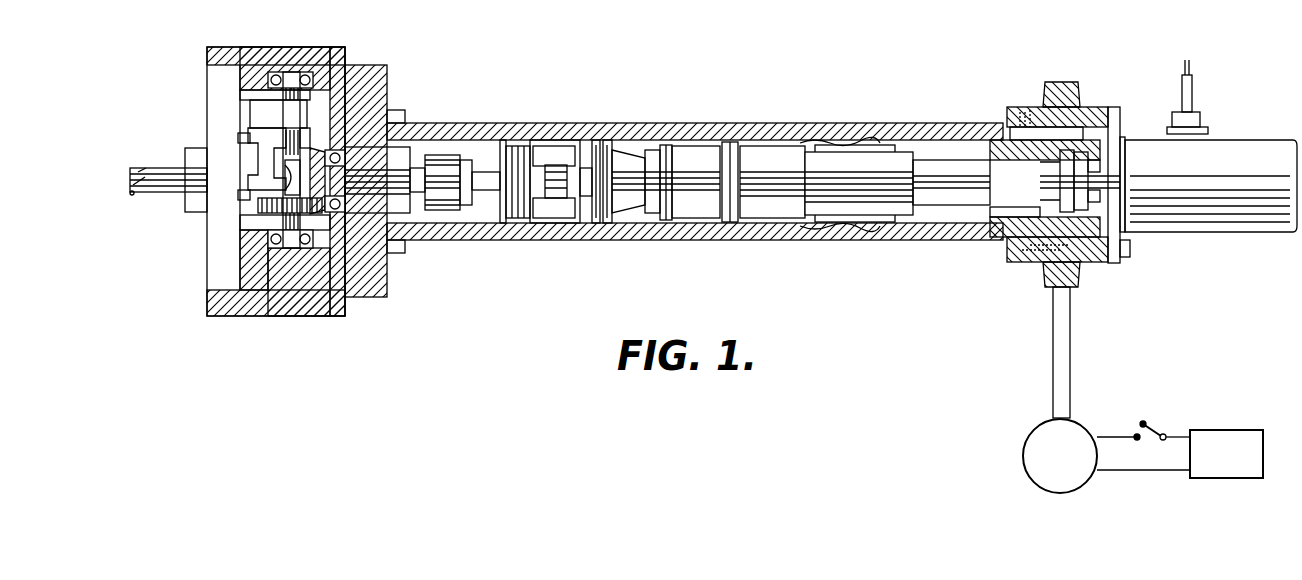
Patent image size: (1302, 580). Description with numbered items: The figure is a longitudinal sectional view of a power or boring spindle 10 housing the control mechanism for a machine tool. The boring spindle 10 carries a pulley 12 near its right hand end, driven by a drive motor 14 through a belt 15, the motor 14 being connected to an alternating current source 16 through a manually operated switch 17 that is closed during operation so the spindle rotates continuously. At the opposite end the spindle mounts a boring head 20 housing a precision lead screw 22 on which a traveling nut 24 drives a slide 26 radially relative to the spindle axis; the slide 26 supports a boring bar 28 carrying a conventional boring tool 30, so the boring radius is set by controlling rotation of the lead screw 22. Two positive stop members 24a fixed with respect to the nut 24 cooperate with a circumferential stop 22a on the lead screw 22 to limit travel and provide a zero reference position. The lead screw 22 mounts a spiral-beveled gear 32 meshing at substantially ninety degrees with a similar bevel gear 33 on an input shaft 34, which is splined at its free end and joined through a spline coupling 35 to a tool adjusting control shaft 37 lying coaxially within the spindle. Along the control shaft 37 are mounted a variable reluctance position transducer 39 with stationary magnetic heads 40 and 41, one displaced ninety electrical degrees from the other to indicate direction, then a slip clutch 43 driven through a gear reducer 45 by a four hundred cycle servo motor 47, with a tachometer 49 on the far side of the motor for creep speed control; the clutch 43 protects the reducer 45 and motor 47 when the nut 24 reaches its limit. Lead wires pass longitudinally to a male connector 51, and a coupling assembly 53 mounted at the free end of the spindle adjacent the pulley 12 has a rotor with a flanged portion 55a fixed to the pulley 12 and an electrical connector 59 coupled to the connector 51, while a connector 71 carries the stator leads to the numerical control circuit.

The boring spindle 10 is at (716, 240).
The pulley 12 is at (1010, 262).
The drive motor 14 is at (1042, 437).
The drive rod 15 is at (1072, 360).
The alternating current source 16 is at (1205, 478).
The switch 17 is at (1155, 430).
The boring head 20 is at (330, 308).
The precision lead screw 22 is at (284, 92).
The circumferential stop 22a is at (284, 172).
The traveling nut 24 is at (313, 102).
The positive stop members 24a is at (272, 168).
The slide 26 is at (225, 98).
The boring bar 28 is at (180, 185).
The boring tool 30 is at (133, 196).
The spiral-beveled gear 32 is at (255, 203).
The spiral-beveled gear 33 is at (348, 115).
The input shaft 34 is at (338, 178).
The spline coupling 35 is at (450, 155).
The tool adjusting control shaft 37 is at (498, 205).
The position transducer 39 is at (556, 160).
The magnetic head 40 is at (548, 215).
The magnetic head 41 is at (563, 205).
The slip clutch 43 is at (607, 215).
The gear reducer 45 is at (690, 155).
The servo motor 47 is at (770, 205).
The tachometer 49 is at (840, 160).
The male connector 51 is at (1003, 125).
The coupling assembly 53 is at (1210, 232).
The flanged portion 55a is at (1112, 110).
The electrical connector 59 is at (1103, 258).
The connector 71 is at (1218, 118).